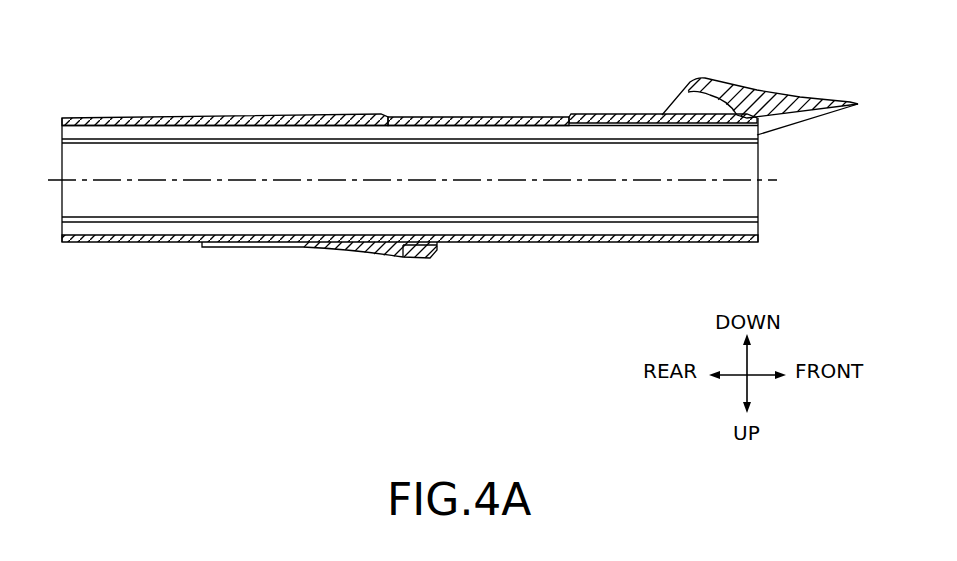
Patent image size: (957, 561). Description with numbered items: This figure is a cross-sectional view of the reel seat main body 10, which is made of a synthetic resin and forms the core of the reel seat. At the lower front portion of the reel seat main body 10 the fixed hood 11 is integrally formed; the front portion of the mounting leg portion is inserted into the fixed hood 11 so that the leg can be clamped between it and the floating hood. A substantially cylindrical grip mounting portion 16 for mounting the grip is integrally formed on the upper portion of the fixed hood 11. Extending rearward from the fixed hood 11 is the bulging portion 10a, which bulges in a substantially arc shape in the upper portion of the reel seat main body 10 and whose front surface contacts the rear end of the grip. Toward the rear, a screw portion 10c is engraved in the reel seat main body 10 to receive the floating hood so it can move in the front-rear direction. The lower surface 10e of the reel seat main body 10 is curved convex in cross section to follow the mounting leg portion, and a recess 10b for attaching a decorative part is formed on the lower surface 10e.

The reel seat main body 10 is at (633, 88).
The bulging portion 10a is at (437, 253).
The recess 10b is at (497, 117).
The screw portion 10c is at (163, 117).
The lower surface 10e is at (605, 114).
The fixed hood 11 is at (757, 89).
The grip mounting portion 16 is at (665, 243).